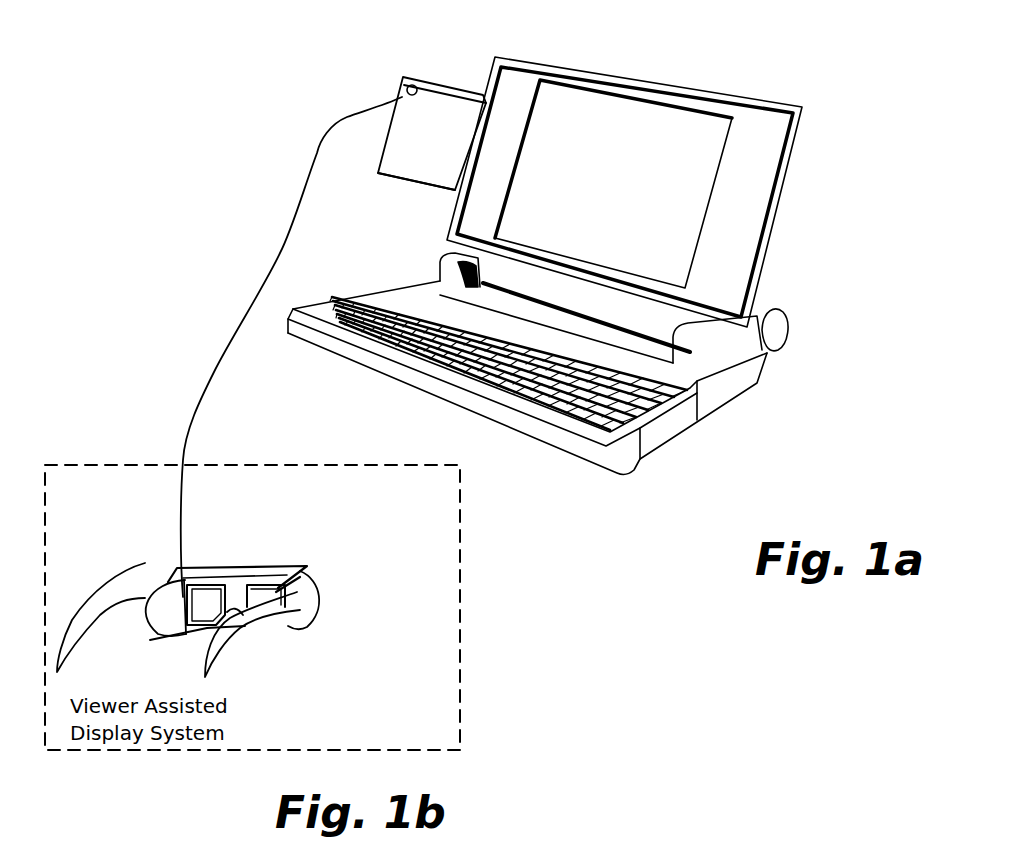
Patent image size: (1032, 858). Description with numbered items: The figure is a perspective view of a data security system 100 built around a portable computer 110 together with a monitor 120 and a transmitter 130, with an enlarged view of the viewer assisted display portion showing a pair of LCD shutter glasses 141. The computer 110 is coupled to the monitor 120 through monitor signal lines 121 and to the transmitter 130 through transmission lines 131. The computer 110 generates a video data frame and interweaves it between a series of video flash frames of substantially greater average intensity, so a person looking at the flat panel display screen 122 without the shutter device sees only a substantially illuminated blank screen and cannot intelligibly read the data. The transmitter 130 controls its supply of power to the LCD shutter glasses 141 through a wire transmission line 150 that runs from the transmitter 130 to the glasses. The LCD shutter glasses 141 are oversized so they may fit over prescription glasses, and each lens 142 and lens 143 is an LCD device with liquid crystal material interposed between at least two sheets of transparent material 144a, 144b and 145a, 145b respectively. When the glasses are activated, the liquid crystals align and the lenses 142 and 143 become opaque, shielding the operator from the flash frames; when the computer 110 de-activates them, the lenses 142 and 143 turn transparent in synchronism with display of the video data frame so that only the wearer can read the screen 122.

In FIG. 1A, the data security system 100 is at (613, 561).
In FIG. 1A, the computer 110 is at (722, 387).
In FIG. 1A, the monitor 120 is at (743, 92).
In FIG. 1A, the monitor signal lines 121 is at (790, 321).
In FIG. 1A, the flat panel display screen 122 is at (630, 110).
In FIG. 1A, the transmitter 130 is at (417, 76).
In FIG. 1A, the transmission lines 131 is at (397, 209).
In FIG. 1A, the wire transmission line 150 is at (198, 398).
In FIG. 1B, the LCD shutter glasses 141 is at (291, 678).
In FIG. 1B, the lens 142 is at (218, 559).
In FIG. 1B, the lens 143 is at (283, 563).
In FIG. 1B, the sheet of transparent material 144a is at (173, 566).
In FIG. 1B, the sheet of transparent material 144b is at (186, 583).
In FIG. 1B, the sheet of transparent material 145a is at (297, 590).
In FIG. 1B, the sheet of transparent material 145b is at (308, 566).